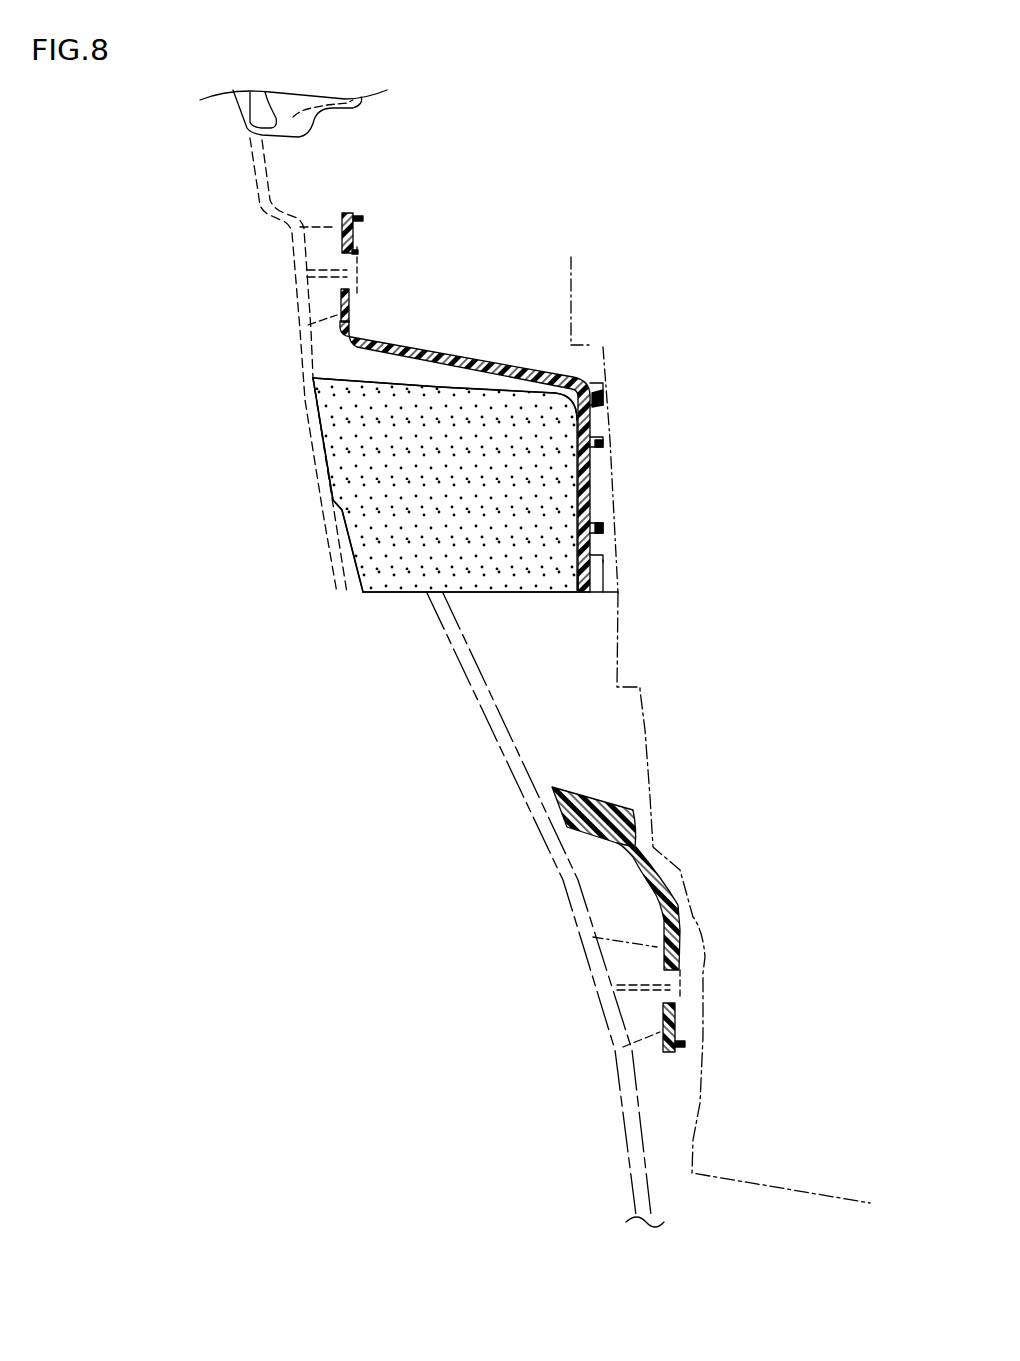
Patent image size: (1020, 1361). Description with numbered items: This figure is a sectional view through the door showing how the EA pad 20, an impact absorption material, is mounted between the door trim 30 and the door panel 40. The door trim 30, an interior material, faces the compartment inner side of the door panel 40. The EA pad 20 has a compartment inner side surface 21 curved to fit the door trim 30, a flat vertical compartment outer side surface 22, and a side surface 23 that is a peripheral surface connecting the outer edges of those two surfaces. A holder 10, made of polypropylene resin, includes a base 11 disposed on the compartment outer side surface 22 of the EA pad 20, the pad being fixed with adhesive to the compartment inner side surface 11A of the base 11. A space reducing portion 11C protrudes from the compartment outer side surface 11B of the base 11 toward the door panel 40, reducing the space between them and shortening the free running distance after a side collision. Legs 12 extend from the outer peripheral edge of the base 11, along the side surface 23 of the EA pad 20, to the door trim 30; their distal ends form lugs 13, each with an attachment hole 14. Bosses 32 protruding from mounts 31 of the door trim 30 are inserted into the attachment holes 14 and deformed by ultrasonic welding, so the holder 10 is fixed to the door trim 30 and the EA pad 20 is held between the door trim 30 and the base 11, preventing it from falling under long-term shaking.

The holder 10 is at (592, 366).
The base 11 is at (586, 487).
The compartment inner side surface 11A is at (577, 570).
The compartment outer side surface 11B is at (593, 558).
The space reducing portion 11C is at (602, 443).
The leg 12 is at (473, 357).
The lug 13 is at (347, 221).
The attachment hole 14 is at (346, 258).
The EA pad 20 is at (366, 477).
The compartment inner side surface 21 is at (317, 412).
The compartment outer side surface 22 is at (578, 523).
The side surface 23 is at (408, 383).
The door trim 30 is at (298, 350).
The mount 31 is at (315, 240).
The boss 32 is at (355, 254).
The door panel 40 is at (618, 663).